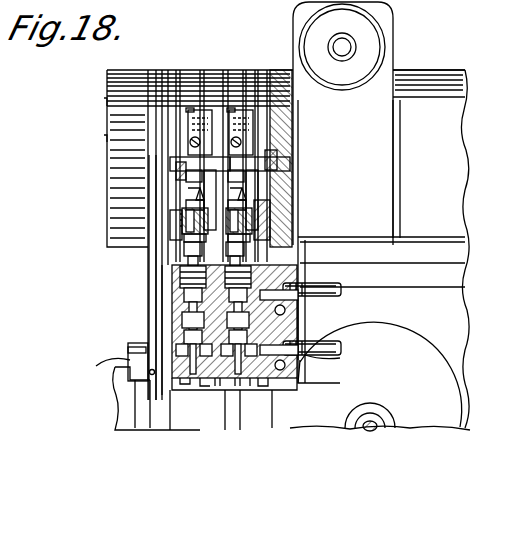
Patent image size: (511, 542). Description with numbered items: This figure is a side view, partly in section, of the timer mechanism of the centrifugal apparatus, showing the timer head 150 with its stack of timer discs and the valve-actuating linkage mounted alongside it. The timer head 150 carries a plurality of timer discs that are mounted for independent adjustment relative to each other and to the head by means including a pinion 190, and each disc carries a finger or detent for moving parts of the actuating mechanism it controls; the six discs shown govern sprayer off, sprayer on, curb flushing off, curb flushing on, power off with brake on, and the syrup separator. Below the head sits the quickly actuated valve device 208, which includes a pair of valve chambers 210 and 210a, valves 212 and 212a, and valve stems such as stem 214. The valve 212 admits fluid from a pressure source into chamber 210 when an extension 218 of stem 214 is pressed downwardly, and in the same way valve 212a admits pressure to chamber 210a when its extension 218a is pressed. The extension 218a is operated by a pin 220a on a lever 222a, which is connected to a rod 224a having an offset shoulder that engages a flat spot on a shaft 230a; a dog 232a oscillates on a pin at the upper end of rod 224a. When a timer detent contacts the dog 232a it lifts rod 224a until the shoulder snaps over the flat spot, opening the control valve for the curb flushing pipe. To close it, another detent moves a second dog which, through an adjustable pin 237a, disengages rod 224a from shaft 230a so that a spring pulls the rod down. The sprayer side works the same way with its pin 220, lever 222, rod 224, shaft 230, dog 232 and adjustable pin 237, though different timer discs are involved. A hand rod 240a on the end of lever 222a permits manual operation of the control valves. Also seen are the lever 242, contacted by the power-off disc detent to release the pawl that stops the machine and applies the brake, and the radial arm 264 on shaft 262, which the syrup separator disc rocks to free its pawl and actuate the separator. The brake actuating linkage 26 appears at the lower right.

The pinion 190 is at (405, 0).
The actuating linkage 26 is at (372, 425).
The timer head 150 is at (107, 113).
The dog 232 is at (235, 136).
The dog 232a is at (190, 136).
The rod 224 is at (262, 150).
The rod 224a is at (170, 153).
The shaft 230 is at (250, 175).
The shaft 230a is at (186, 176).
The adjustable pin 237 is at (246, 203).
The adjustable pin 237a is at (186, 204).
The lever 222 is at (252, 215).
The lever 222a is at (182, 220).
The pin 220 is at (258, 232).
The pin 220a is at (176, 245).
The valve stem extension 218 is at (245, 250).
The valve stem extension 218a is at (184, 252).
The valve chamber 210 is at (330, 250).
The valve chamber 210a is at (96, 366).
The valve stem 214 is at (300, 316).
The valve device 208 is at (172, 318).
The valve 212 is at (234, 404).
The valve 212a is at (156, 398).
The shaft 262 is at (128, 360).
The radial arm 264 is at (160, 278).
The lever 242 is at (160, 305).
The hand rod 240a is at (0, 320).